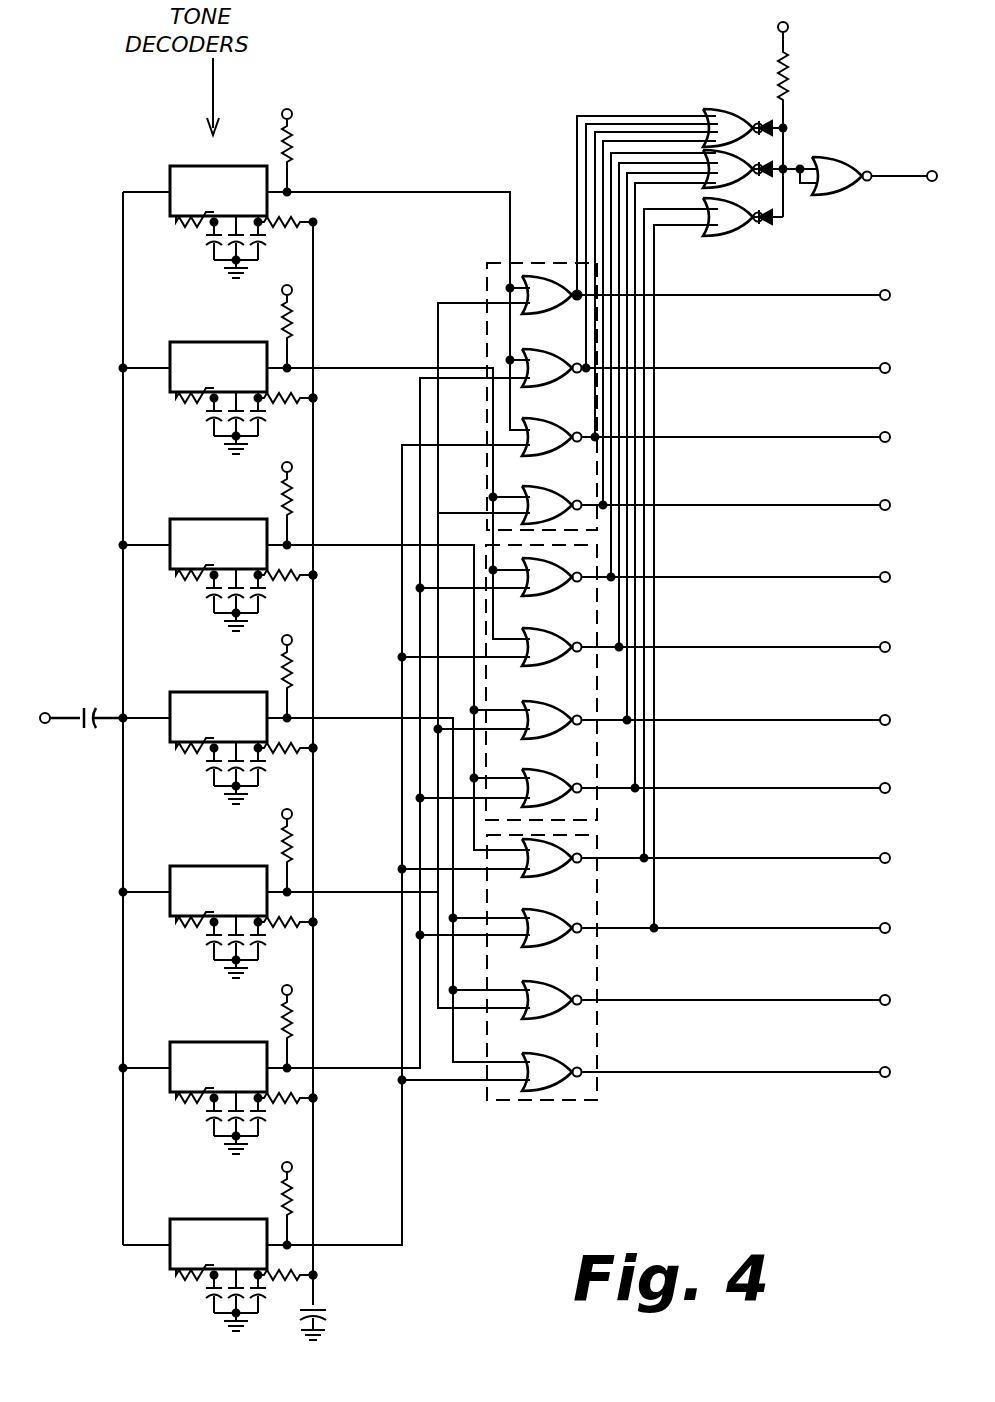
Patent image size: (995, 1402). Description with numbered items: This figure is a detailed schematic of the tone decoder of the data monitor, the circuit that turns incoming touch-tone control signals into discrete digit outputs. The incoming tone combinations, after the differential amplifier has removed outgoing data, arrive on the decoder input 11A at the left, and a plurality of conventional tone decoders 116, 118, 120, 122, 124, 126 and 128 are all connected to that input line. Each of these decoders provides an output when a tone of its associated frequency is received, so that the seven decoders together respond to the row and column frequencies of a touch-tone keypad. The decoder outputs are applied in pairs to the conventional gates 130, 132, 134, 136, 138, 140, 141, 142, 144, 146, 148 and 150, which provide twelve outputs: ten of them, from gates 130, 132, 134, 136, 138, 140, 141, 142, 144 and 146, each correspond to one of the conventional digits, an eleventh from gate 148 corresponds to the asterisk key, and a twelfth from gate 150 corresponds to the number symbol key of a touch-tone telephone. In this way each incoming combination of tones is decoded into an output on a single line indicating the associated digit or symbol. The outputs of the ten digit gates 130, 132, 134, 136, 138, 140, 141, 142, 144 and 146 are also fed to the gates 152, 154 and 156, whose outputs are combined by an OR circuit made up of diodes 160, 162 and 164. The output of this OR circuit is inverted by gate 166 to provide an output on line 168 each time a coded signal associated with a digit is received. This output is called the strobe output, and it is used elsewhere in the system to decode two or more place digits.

The input terminal with coupling capacitor 11A is at (72, 716).
The tone decoder 116 is at (188, 174).
The tone decoder 118 is at (196, 350).
The tone decoder 120 is at (196, 525).
The tone decoder 122 is at (184, 694).
The tone decoder 124 is at (196, 882).
The tone decoder 126 is at (196, 1057).
The tone decoder 128 is at (196, 1232).
The gate 130 is at (565, 252).
The gate 132 is at (568, 338).
The gate 134 is at (570, 408).
The gate 136 is at (564, 480).
The gate 138 is at (540, 590).
The gate 140 is at (570, 676).
The gate 141 is at (570, 748).
The gate 142 is at (560, 800).
The gate 144 is at (560, 868).
The gate 146 is at (540, 942).
The gate 148 is at (556, 1010).
The gate 150 is at (550, 1088).
The gate 152 is at (709, 114).
The gate 154 is at (712, 186).
The gate 156 is at (712, 230).
The diode 160 is at (758, 222).
The diode 162 is at (762, 183).
The diode 164 is at (762, 122).
The gate 166 is at (822, 196).
The line 168 is at (916, 182).